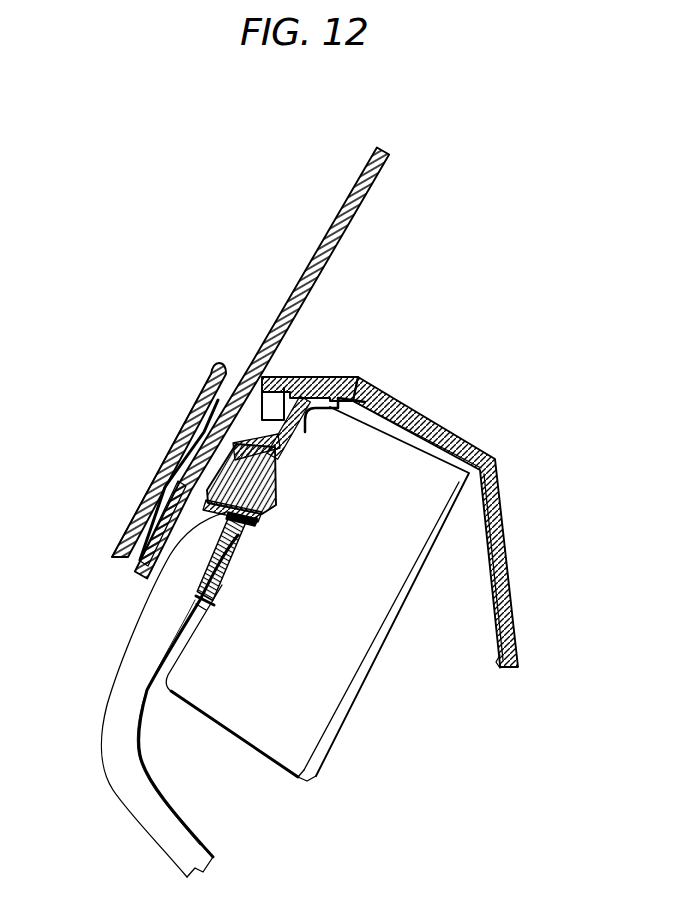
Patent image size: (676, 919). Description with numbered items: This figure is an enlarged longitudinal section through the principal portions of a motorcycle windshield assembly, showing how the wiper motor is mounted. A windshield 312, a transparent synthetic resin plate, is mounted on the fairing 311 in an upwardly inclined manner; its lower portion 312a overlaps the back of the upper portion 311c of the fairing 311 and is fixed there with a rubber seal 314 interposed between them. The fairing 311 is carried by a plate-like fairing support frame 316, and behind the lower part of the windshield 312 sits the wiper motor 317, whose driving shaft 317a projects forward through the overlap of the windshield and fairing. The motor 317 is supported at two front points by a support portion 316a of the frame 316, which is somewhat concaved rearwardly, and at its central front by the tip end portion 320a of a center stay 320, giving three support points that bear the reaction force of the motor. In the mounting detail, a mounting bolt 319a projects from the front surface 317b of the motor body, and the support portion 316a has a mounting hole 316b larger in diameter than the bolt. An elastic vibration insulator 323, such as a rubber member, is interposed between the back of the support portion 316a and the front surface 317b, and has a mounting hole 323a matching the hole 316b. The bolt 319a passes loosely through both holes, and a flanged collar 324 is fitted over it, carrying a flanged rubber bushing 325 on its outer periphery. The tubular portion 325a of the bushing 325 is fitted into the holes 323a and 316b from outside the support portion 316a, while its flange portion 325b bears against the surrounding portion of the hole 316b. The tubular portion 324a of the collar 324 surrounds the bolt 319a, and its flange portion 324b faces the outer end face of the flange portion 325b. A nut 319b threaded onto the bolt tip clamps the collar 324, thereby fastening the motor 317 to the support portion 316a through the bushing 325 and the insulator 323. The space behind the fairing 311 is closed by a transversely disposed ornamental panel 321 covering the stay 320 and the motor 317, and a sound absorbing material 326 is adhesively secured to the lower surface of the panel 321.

The fairing 311 is at (135, 464).
The upper portion 311c is at (178, 439).
The windshield 312 is at (348, 198).
The lower portion 312a is at (117, 544).
The rubber seal 314 is at (158, 511).
The fairing support frame 316 is at (357, 395).
The support portion 316a is at (198, 626).
The mounting hole 316b is at (292, 463).
The wiper motor 317 is at (317, 632).
The driving shaft 317a is at (266, 726).
The front surface 317b is at (178, 662).
The mounting bolt 319a is at (423, 547).
The nut 319b is at (188, 425).
The center stay 320 is at (138, 788).
The tip end portion 320a is at (216, 591).
The ornamental panel 321 is at (485, 563).
The elastic vibration insulator 323 is at (221, 612).
The mounting hole 323a is at (262, 533).
The flanged collar 324 is at (267, 427).
The tubular portion 324a is at (277, 496).
The flange portion 324b is at (207, 532).
The flanged rubber bushing 325 is at (218, 548).
The tubular portion 325a is at (293, 477).
The flange portion 325b is at (352, 393).
The sound absorbing material 326 is at (492, 650).